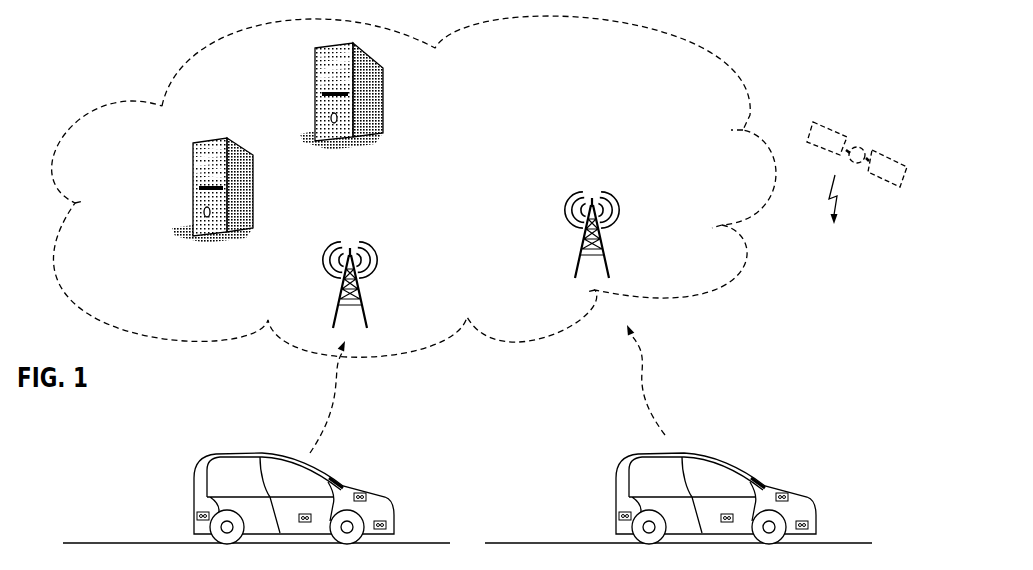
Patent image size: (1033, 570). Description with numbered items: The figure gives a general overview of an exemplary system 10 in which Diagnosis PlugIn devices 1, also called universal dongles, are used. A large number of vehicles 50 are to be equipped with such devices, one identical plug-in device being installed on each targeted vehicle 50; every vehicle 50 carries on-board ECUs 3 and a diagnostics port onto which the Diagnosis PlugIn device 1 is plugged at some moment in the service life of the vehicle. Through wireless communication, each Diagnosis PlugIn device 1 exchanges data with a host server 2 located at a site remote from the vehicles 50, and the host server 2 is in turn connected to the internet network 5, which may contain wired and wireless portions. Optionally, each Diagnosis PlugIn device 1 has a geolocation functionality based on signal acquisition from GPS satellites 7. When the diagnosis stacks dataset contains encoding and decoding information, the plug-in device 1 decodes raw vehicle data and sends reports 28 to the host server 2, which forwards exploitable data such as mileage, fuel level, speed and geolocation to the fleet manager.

The Diagnosis PlugIn device 1 is at (307, 514).
The host server 2 is at (216, 254).
The on-board ECUs 3 is at (386, 522).
The internet network 5 is at (140, 93).
The GPS satellites 7 is at (887, 149).
The system 10 is at (826, 322).
The reports 28 is at (340, 403).
The vehicles 50 is at (182, 502).